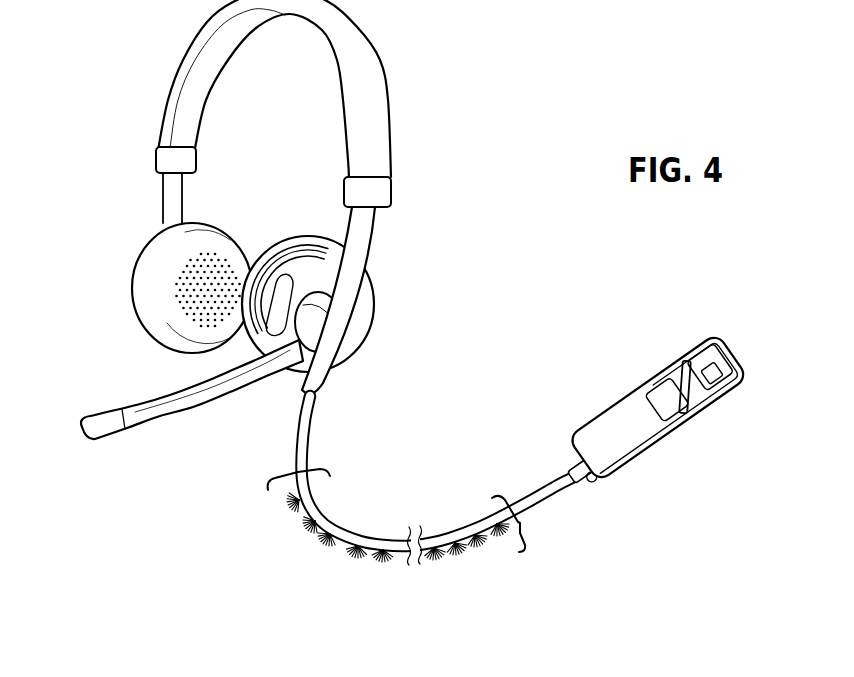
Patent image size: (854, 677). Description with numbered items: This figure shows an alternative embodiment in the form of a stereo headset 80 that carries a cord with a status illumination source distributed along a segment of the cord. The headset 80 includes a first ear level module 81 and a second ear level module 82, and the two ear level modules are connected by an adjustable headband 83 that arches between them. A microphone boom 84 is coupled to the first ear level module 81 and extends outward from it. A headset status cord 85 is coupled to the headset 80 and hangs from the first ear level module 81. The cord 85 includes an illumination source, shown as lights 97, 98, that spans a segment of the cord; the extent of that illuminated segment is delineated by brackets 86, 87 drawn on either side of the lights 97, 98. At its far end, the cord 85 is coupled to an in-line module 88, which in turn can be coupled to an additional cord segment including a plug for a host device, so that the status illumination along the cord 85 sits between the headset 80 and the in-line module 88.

The stereo headset 80 is at (382, 324).
The first ear level module 81 is at (357, 305).
The second ear level module 82 is at (150, 281).
The adjustable headband 83 is at (185, 55).
The microphone boom 84 is at (122, 420).
The headset status cord 85 is at (416, 518).
The bracket 86 is at (275, 477).
The bracket 87 is at (520, 523).
The in-line module 88 is at (642, 438).
The lights 97 is at (330, 537).
The lights 98 is at (454, 543).